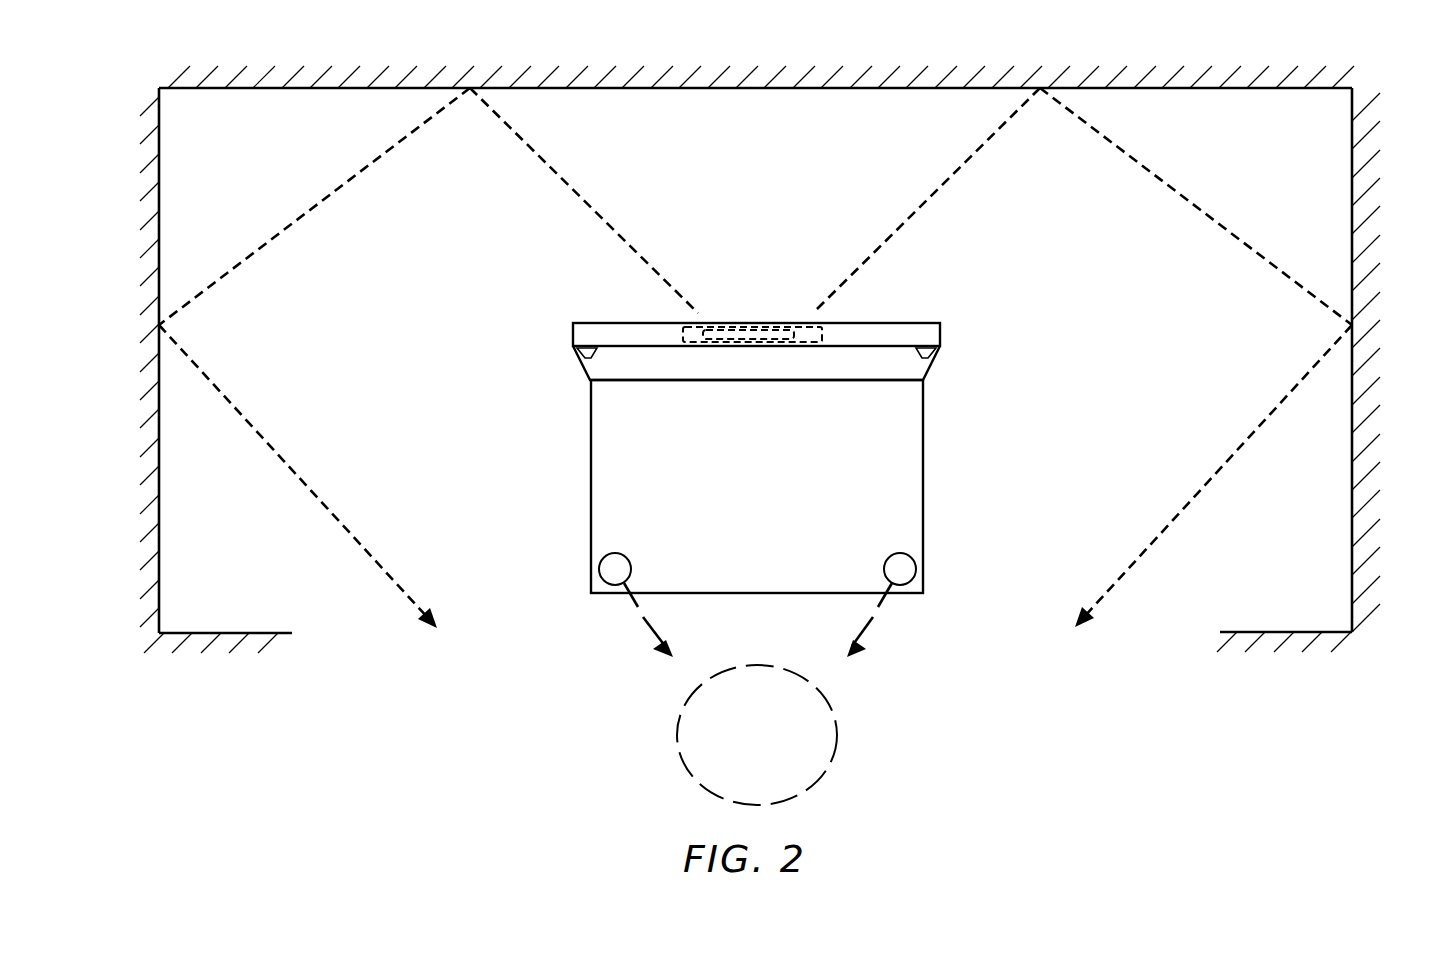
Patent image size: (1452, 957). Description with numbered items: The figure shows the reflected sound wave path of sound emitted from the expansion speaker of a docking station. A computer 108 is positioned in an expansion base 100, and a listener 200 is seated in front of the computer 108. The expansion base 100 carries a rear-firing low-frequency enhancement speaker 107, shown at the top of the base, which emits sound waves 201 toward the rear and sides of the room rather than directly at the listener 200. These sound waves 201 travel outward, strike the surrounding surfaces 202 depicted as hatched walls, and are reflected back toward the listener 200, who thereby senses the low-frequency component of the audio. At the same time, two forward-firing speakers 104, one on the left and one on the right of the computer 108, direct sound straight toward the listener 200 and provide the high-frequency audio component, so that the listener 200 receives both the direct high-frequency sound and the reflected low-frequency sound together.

The expansion base 100 is at (758, 473).
The forward-firing speakers 104 is at (598, 568).
The rear-firing low-frequency enhancement speaker 107 is at (822, 330).
The computer 108 is at (784, 512).
The listener 200 is at (779, 746).
The sound waves 201 is at (862, 250).
The surfaces 202 is at (1235, 82).